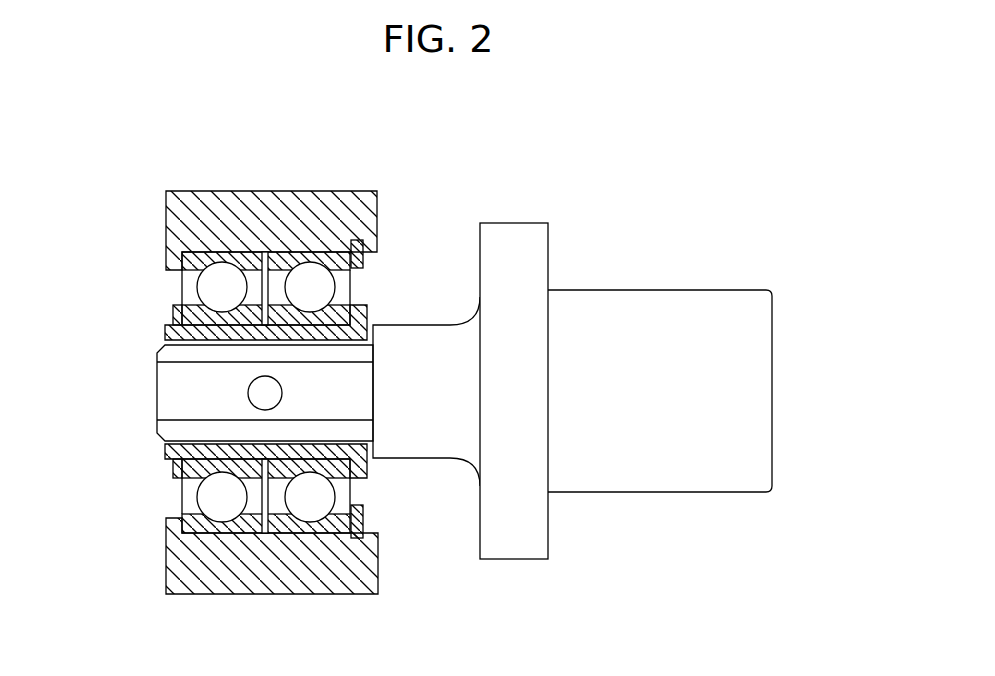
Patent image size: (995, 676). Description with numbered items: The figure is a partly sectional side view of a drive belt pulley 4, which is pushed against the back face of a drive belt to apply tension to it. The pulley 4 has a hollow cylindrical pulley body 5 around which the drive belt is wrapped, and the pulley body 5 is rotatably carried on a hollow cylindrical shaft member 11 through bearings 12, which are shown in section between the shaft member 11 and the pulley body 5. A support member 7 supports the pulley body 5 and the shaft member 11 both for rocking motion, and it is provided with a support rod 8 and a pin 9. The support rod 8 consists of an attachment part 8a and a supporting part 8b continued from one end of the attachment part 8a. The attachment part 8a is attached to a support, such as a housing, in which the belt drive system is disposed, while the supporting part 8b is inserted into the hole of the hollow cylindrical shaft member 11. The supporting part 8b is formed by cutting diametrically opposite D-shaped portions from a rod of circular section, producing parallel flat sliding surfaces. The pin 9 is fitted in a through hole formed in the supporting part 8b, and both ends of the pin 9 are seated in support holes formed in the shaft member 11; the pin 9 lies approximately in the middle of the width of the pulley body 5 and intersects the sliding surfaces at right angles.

The drive belt pulley 4 is at (423, 356).
The pulley body 5 is at (283, 190).
The support member 7 is at (633, 288).
The support rod 8 is at (407, 323).
The attachment part 8a is at (512, 548).
The supporting part 8b is at (157, 400).
The pin 9 is at (262, 393).
The shaft member 11 is at (163, 332).
The bearings 12 is at (170, 292).